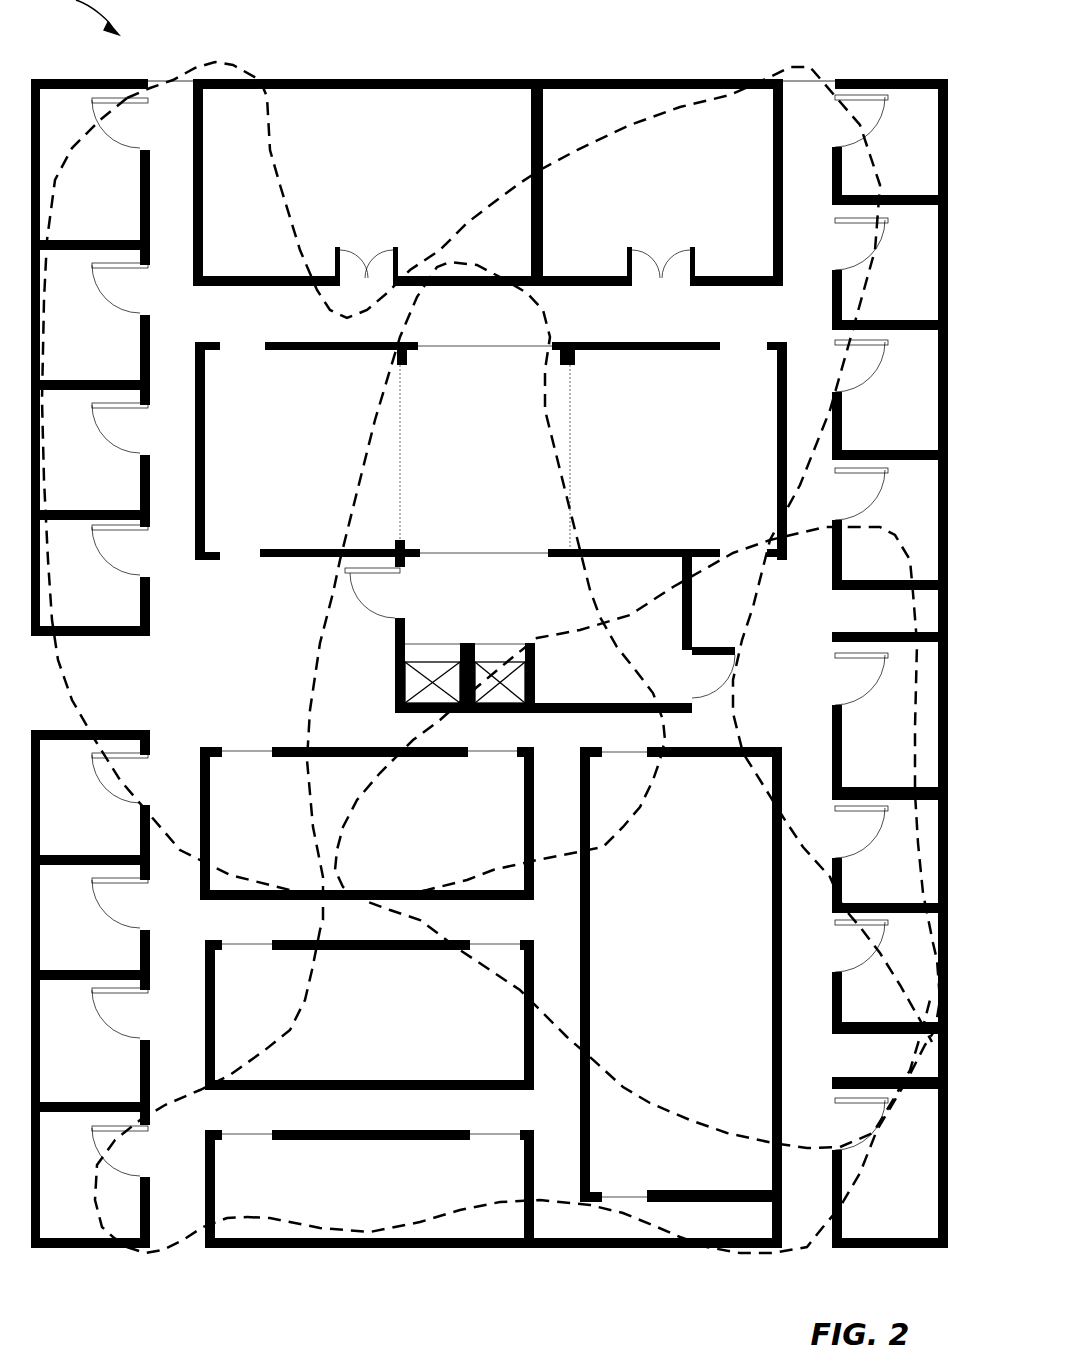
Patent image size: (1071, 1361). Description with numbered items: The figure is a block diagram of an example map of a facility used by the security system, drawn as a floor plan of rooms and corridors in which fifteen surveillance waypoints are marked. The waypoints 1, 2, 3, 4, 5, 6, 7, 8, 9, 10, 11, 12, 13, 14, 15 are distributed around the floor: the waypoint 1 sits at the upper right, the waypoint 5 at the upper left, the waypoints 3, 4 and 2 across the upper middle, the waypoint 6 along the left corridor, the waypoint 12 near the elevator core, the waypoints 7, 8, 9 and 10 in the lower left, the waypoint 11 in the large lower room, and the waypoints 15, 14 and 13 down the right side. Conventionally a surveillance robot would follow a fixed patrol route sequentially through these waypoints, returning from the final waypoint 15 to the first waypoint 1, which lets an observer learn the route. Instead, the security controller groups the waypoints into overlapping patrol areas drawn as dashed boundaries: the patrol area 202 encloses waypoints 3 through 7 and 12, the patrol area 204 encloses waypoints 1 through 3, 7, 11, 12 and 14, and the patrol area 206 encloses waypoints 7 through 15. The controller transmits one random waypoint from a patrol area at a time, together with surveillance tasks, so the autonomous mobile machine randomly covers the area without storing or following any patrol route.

The waypoint 1 is at (745, 182).
The waypoint 2 is at (667, 520).
The waypoint 3 is at (488, 209).
The waypoint 4 is at (373, 480).
The waypoint 5 is at (112, 357).
The waypoint 6 is at (90, 486).
The waypoint 7 is at (367, 823).
The waypoint 8 is at (369, 1015).
The waypoint 9 is at (493, 1189).
The waypoint 10 is at (118, 989).
The waypoint 11 is at (681, 997).
The waypoint 12 is at (543, 688).
The waypoint 13 is at (860, 1173).
The waypoint 14 is at (890, 871).
The waypoint 15 is at (888, 663).
The patrol area 202 is at (250, 70).
The patrol area 204 is at (778, 72).
The patrol area 206 is at (270, 1232).